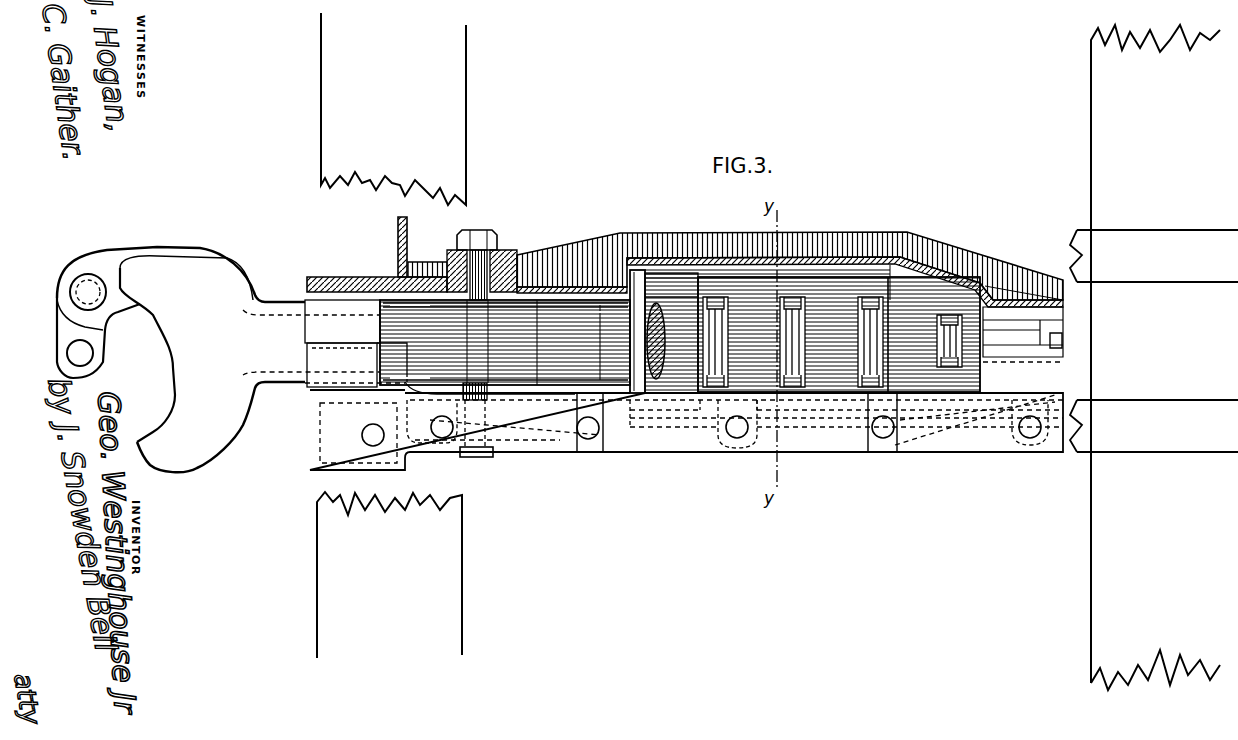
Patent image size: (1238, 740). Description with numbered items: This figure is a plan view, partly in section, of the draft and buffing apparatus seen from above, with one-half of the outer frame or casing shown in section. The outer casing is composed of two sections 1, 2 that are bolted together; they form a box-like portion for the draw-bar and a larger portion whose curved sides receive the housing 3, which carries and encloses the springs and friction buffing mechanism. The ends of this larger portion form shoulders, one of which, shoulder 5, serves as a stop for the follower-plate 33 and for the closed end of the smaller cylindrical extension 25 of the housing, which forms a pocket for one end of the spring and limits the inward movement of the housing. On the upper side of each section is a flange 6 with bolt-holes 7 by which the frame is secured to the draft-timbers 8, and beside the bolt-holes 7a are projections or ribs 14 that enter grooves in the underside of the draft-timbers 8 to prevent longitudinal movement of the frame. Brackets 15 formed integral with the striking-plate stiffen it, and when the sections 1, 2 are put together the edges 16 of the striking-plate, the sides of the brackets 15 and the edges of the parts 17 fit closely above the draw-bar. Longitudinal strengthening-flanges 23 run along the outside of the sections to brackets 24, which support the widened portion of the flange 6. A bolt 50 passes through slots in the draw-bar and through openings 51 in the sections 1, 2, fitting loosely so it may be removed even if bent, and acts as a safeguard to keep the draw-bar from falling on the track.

The section of the outer casing or frame 1 is at (627, 274).
The section of the outer casing or frame 2 is at (568, 288).
The housing 3 is at (839, 334).
The shoulder 5 is at (992, 286).
The flange 6 is at (542, 442).
The bolt-holes 7 is at (372, 446).
The bolt-holes 7a is at (588, 439).
The draft-timbers 8 is at (1154, 341).
The projections or ribs 14 is at (578, 406).
The brackets 15 is at (342, 365).
The edges of the striking-plate 16 is at (305, 338).
The parts 17 is at (476, 368).
The longitudinal strengthening-flanges 23 is at (826, 241).
The brackets 24 is at (398, 250).
The extension of the housing 25 is at (950, 320).
The follower-plate 33 is at (648, 282).
The bolt 50 is at (468, 262).
The openings 51 is at (500, 262).